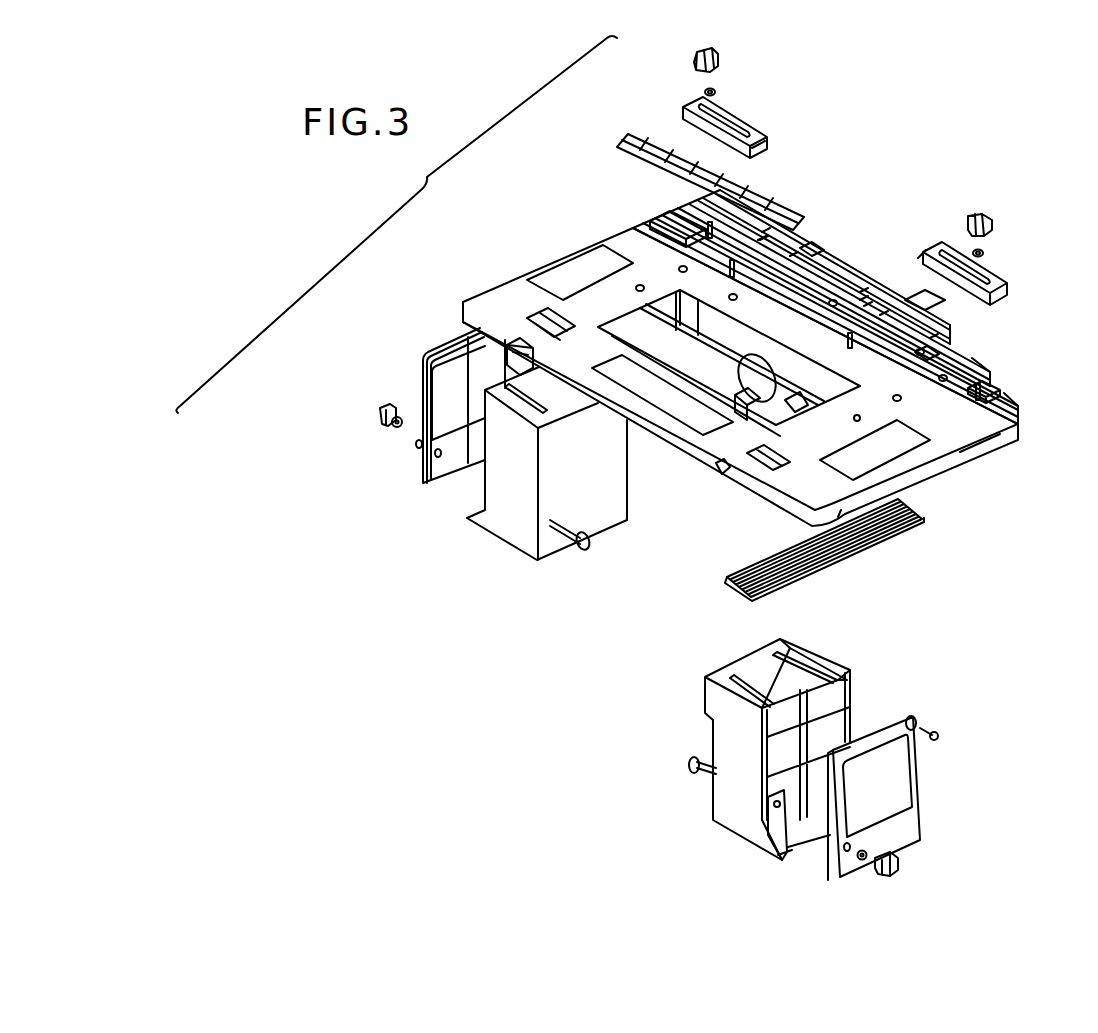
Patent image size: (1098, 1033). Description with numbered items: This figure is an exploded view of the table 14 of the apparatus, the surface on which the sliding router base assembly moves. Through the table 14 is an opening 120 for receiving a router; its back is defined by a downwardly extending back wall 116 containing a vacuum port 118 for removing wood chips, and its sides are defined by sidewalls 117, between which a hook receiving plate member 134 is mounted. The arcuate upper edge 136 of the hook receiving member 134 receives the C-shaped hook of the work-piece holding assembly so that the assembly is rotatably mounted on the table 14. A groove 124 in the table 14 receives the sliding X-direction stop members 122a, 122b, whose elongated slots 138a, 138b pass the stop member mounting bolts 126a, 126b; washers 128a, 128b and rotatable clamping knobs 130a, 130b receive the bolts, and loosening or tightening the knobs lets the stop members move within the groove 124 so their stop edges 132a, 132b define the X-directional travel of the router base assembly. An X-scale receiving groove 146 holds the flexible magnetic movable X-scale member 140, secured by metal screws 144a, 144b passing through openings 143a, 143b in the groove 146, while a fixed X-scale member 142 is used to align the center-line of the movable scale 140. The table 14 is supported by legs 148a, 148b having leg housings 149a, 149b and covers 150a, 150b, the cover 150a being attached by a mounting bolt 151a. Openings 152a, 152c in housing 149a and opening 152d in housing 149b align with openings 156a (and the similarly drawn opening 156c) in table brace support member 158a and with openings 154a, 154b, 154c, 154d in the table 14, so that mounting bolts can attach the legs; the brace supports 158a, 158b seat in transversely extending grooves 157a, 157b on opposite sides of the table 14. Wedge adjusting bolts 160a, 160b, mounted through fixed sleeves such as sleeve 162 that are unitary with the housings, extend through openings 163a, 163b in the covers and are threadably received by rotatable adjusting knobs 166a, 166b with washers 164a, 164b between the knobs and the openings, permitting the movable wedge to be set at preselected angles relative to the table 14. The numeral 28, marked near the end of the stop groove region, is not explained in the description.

The table 14 is at (591, 209).
The rail end 28 is at (1010, 400).
The back wall 116 is at (850, 305).
The sidewalls 117 is at (644, 291).
The vacuum port 118 is at (700, 398).
The opening 120 is at (655, 318).
The sliding X-direction stop member 122a is at (1003, 295).
The sliding X-direction stop member 122b is at (748, 122).
The groove 124 is at (1024, 425).
The stop member mounting bolt 126a is at (1002, 384).
The stop member mounting bolt 126b is at (712, 222).
The washer 128a is at (984, 250).
The washer 128b is at (716, 90).
The rotatable clamping knob 130a is at (990, 222).
The rotatable clamping knob 130b is at (716, 58).
The stop edge 132a is at (928, 248).
The stop edge 132b is at (770, 144).
The hook receiving plate member 134 is at (748, 406).
The upper edge 136 is at (794, 415).
The elongated slot 138a is at (993, 274).
The elongated slot 138b is at (686, 112).
The flexible magnet movable X-scale member 140 is at (618, 146).
The fixed X-scale member 142 is at (912, 306).
The opening 143a is at (925, 350).
The opening 143b is at (800, 244).
The metal screw 144a is at (870, 300).
The metal screw 144b is at (755, 235).
The X-scale receiving groove 146 is at (978, 440).
The leg 148a is at (866, 683).
The leg 148b is at (352, 425).
The leg housing 149a is at (815, 660).
The leg housing 149b is at (500, 528).
The cover 150a is at (915, 757).
The cover 150b is at (420, 364).
The mounting bolt 151a is at (925, 730).
The opening 152a is at (778, 650).
The opening 152c is at (728, 676).
The opening 152d is at (500, 378).
The opening 154a is at (976, 384).
The opening 154b is at (660, 215).
The opening 154c is at (858, 420).
The opening 154d is at (632, 272).
The opening 156a is at (910, 508).
The ribbon cable 156c is at (892, 530).
The transversely extending groove 157a is at (722, 480).
The transversely extending groove 157b is at (530, 340).
The table brace support member 158a is at (926, 518).
The table brace support member 158b is at (538, 358).
The wedge adjusting bolt 160a is at (694, 757).
The wedge adjusting bolt 160b is at (590, 543).
The sleeve 162 is at (770, 820).
The opening 163a is at (845, 852).
The opening 163b is at (432, 458).
The washer 164a is at (868, 852).
The washer 164b is at (414, 445).
The rotatable adjusting knob 166a is at (900, 868).
The rotatable adjusting knob 166b is at (378, 412).